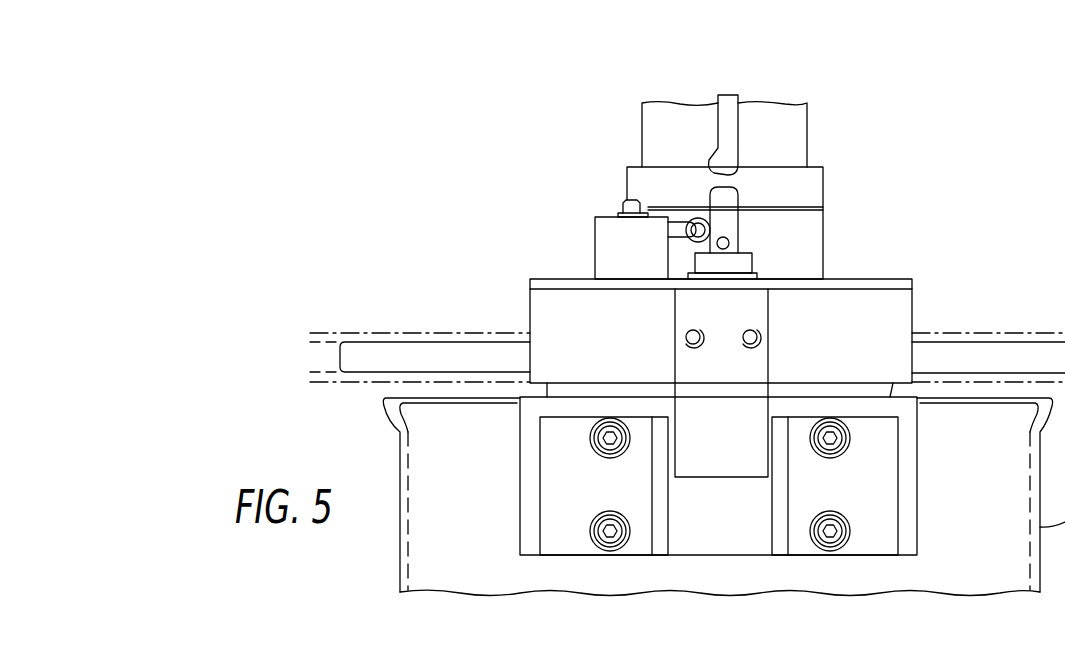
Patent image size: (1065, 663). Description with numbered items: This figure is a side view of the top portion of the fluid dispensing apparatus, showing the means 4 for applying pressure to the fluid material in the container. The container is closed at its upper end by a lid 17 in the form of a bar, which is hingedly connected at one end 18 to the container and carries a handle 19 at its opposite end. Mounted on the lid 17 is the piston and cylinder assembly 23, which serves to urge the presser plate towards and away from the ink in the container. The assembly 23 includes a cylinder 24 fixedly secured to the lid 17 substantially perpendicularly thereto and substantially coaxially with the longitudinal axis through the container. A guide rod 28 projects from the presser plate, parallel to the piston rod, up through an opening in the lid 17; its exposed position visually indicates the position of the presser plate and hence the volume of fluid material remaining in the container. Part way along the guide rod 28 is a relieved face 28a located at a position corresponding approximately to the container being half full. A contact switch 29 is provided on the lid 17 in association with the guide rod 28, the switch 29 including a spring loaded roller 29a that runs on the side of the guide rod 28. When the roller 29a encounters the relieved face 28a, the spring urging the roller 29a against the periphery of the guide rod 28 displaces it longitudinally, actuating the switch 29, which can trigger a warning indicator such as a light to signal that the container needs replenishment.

The means for applying pressure 4 is at (837, 213).
The lid 17 is at (893, 280).
The hinge connection 18 is at (747, 460).
The handle 19 is at (407, 352).
The piston and cylinder assembly 23 is at (635, 192).
The cylinder 24 is at (800, 118).
The guide rod 28 is at (733, 143).
The relieved face 28a is at (716, 122).
The contact switch 29 is at (678, 233).
The spring loaded roller 29a is at (700, 212).